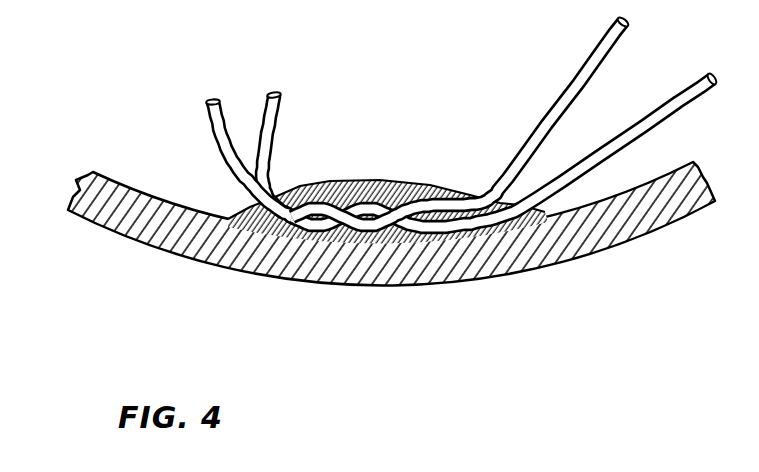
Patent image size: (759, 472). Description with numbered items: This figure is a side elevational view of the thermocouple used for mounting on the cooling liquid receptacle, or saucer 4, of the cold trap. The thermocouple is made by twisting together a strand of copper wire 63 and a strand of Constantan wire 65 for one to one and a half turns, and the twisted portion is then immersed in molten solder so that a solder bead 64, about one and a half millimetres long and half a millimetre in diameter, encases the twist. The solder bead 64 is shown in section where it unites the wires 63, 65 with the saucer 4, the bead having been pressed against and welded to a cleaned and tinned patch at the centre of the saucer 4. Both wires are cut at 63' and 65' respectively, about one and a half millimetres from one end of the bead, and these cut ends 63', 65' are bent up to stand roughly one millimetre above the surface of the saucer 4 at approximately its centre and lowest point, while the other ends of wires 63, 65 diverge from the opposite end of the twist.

The saucer 4 is at (130, 189).
The copper wire 63 is at (471, 120).
The Constantan wire 65 is at (510, 149).
The cut end of copper wire 63' is at (248, 145).
The cut end of Constantan wire 65' is at (284, 142).
The solder bead 64 is at (378, 181).